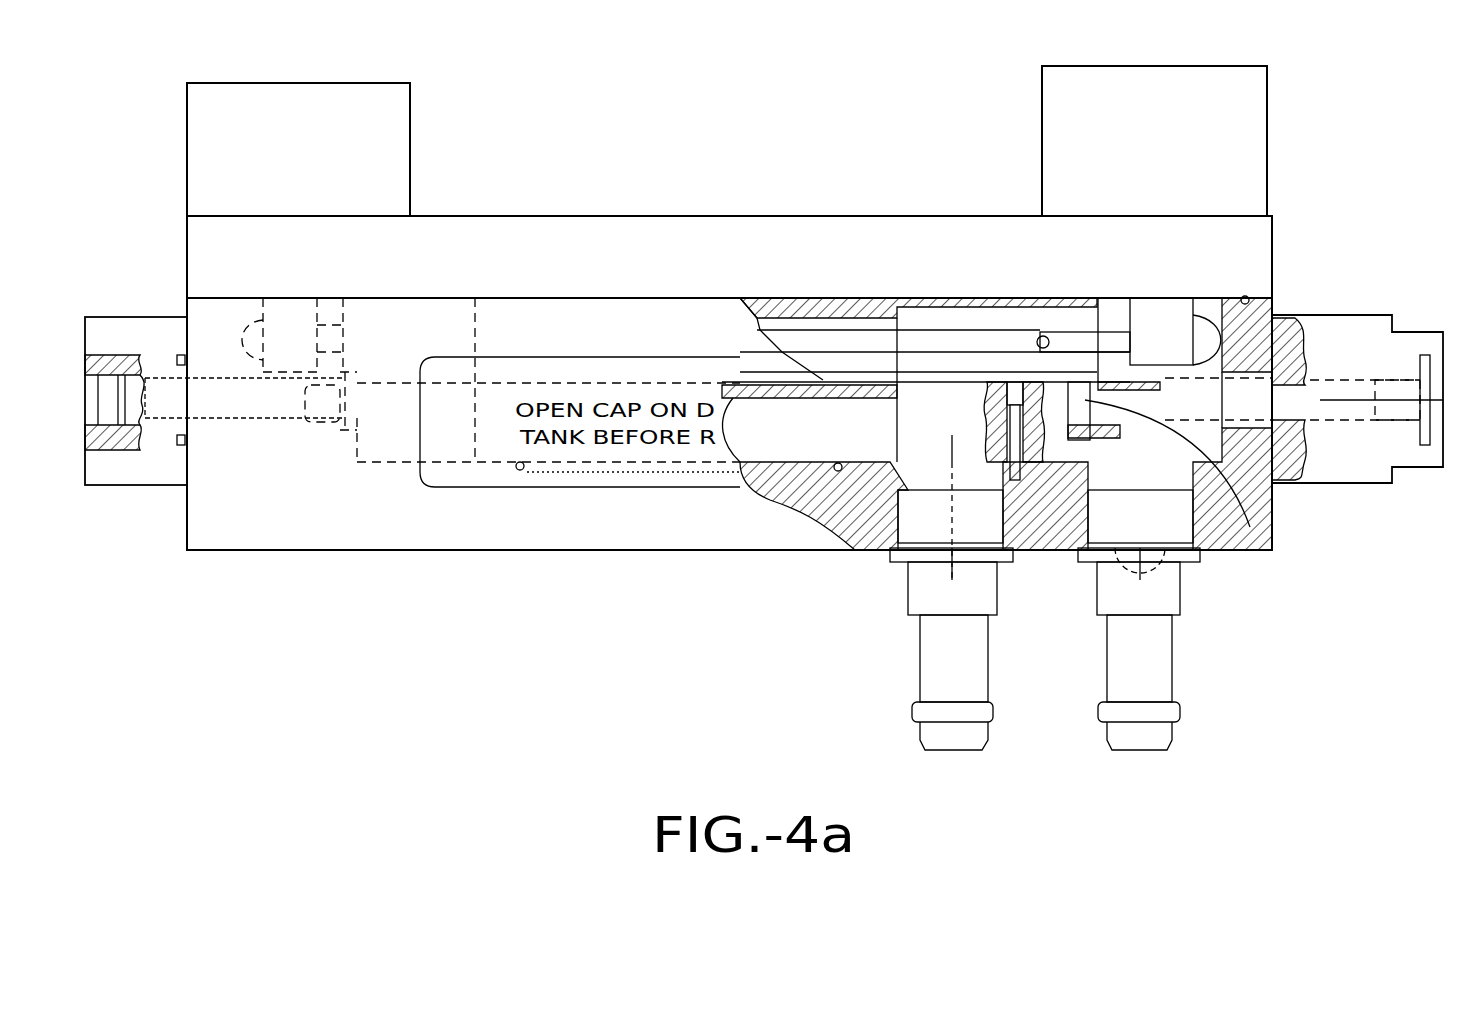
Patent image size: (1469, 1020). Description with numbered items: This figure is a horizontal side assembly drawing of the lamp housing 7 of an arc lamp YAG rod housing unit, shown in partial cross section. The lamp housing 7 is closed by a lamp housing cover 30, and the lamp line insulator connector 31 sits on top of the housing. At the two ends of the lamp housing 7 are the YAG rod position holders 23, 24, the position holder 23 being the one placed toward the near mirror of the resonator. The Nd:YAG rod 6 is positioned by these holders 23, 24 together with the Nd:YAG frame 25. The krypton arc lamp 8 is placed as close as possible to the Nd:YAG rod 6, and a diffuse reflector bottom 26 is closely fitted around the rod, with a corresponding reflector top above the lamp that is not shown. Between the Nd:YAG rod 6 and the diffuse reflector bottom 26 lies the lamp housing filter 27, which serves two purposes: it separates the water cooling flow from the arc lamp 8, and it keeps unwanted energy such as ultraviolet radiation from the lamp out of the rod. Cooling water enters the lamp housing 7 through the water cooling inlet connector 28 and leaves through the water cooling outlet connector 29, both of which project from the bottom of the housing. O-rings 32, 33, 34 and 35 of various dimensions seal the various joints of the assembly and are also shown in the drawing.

The Nd:YAG rod 6 is at (1275, 530).
The lamp housing 7 is at (515, 550).
The krypton arc lamp 8 is at (960, 298).
The YAG rod position holder 23 is at (160, 317).
The YAG rod position holder 24 is at (1330, 315).
The Nd:YAG frame 25 is at (1055, 440).
The diffuse reflector bottom 26 is at (880, 400).
The lamp housing filter 27 is at (800, 298).
The water cooling inlet connector 28 is at (908, 615).
The water cooling outlet connector 29 is at (1182, 612).
The lamp housing cover 30 is at (535, 215).
The lamp line insulator connector 31 is at (202, 153).
The O-ring 32 is at (1245, 300).
The O-ring 33 is at (1305, 445).
The O-ring 34 is at (838, 470).
The O-ring 35 is at (148, 440).